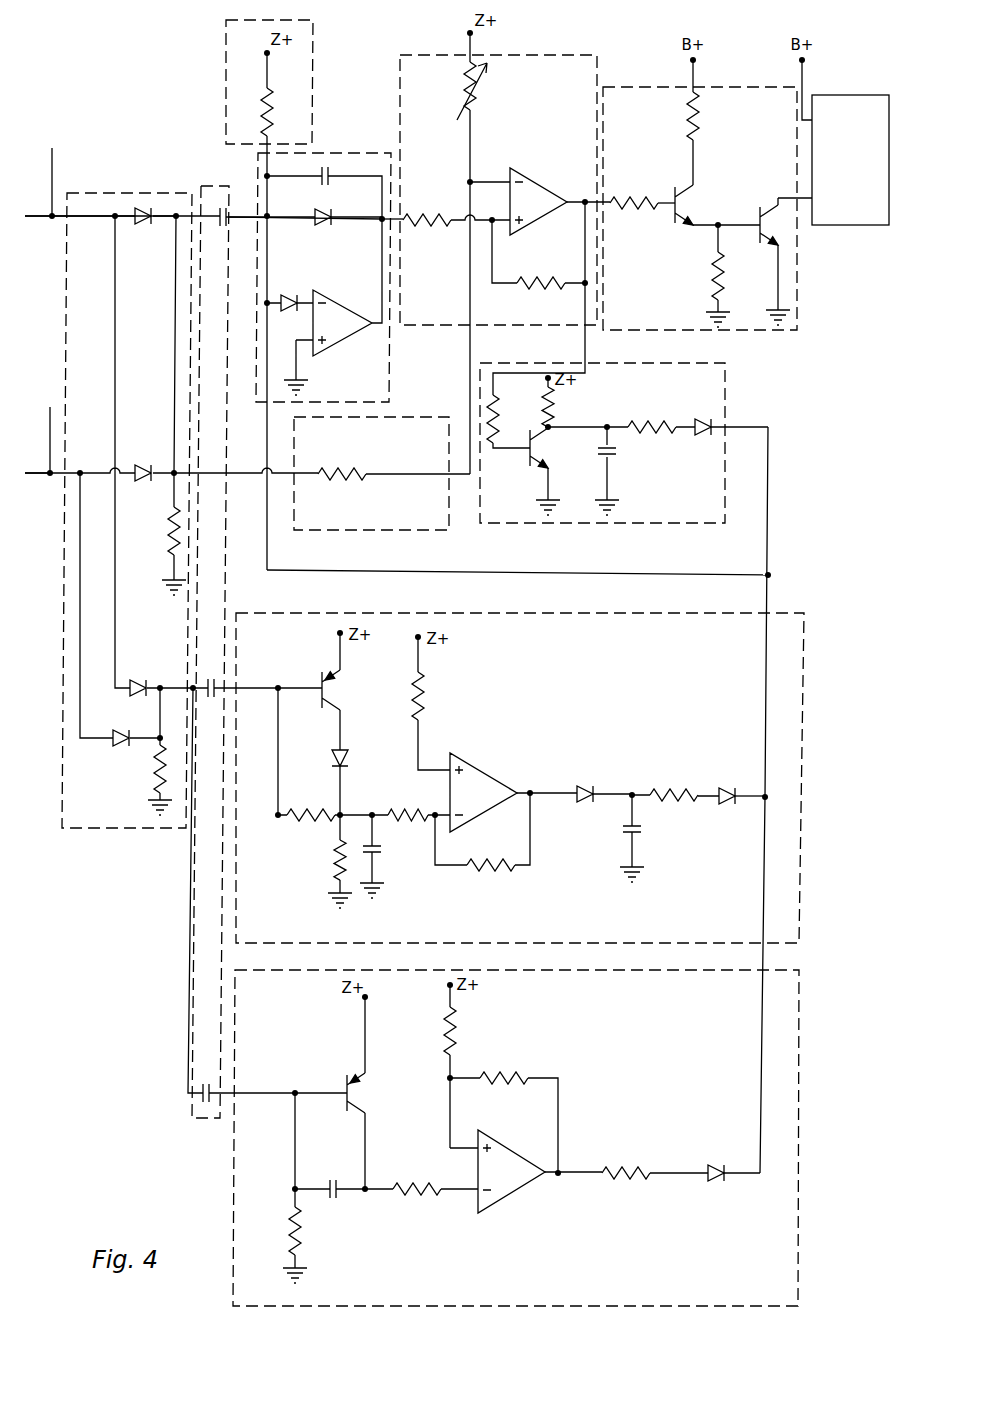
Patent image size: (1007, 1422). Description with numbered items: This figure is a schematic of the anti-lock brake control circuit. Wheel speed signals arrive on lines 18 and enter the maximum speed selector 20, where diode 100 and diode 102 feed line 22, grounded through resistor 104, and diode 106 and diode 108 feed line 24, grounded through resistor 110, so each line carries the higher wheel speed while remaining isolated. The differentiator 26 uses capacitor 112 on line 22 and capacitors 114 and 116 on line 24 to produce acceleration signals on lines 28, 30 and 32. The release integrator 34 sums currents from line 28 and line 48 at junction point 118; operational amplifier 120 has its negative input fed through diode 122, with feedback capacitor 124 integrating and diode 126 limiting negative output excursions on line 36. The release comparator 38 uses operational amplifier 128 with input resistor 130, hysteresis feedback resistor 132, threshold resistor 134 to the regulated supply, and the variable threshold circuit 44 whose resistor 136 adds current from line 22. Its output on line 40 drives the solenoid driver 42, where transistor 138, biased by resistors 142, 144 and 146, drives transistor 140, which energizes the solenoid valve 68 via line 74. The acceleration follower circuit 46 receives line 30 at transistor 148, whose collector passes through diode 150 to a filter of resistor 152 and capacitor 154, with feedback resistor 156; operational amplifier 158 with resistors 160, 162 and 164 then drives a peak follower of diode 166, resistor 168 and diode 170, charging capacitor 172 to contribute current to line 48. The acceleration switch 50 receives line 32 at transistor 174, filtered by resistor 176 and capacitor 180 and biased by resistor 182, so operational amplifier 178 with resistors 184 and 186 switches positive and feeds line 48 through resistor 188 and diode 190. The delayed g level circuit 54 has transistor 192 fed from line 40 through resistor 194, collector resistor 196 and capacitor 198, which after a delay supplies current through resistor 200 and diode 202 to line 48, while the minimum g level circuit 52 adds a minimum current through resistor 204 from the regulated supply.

The line 18 is at (60, 220).
The maximum speed selector 20 is at (100, 828).
The line 22 is at (160, 213).
The line 24 is at (158, 716).
The differentiator 26 is at (205, 186).
The line 28 is at (247, 214).
The line 30 is at (272, 684).
The line 32 is at (307, 1090).
The release integrator 34 is at (389, 390).
The line 36 is at (395, 216).
The release comparator 38 is at (555, 55).
The line 40 is at (590, 200).
The solenoid driver 42 is at (743, 87).
The variable threshold circuit 44 is at (415, 530).
The acceleration follower circuit 46 is at (800, 868).
The line 48 is at (650, 573).
The acceleration switch 50 is at (800, 1078).
The minimum g level circuit 52 is at (313, 55).
The delayed g level circuit 54 is at (725, 393).
The solenoid valve 68 is at (855, 98).
The line 74 is at (790, 200).
The diode 100 is at (140, 226).
The diode 102 is at (143, 466).
The resistor 104 is at (170, 540).
The diode 106 is at (138, 680).
The diode 108 is at (118, 745).
The resistor 110 is at (157, 772).
The capacitor 112 is at (222, 228).
The capacitor 114 is at (214, 696).
The capacitor 116 is at (202, 1100).
The junction point 118 is at (270, 212).
The operational amplifier 120 is at (345, 330).
The diode 122 is at (288, 296).
The feedback capacitor 124 is at (327, 168).
The diode 126 is at (322, 226).
The operational amplifier 128 is at (528, 180).
The resistor 130 is at (420, 228).
The feedback resistor 132 is at (545, 278).
The resistor 134 is at (482, 95).
The resistor 136 is at (350, 480).
The transistor 138 is at (672, 200).
The transistor 140 is at (768, 205).
The resistor 142 is at (625, 200).
The resistor 144 is at (697, 125).
The resistor 146 is at (714, 268).
The transistor 148 is at (318, 685).
The diode 150 is at (350, 758).
The resistor 152 is at (336, 860).
The capacitor 154 is at (378, 852).
The feedback resistor 156 is at (300, 820).
The operational amplifier 158 is at (480, 775).
The resistor 160 is at (422, 695).
The input resistor 162 is at (408, 810).
The feedback resistor 164 is at (500, 872).
The diode 166 is at (588, 788).
The resistor 168 is at (675, 792).
The diode 170 is at (725, 804).
The capacitor 172 is at (628, 830).
The transistor 174 is at (345, 1105).
The resistor 176 is at (420, 1194).
The operational amplifier 178 is at (528, 1190).
The capacitor 180 is at (335, 1197).
The resistor 182 is at (292, 1225).
The resistor 184 is at (448, 1030).
The feedback resistor 186 is at (505, 1075).
The resistor 188 is at (622, 1168).
The diode 190 is at (718, 1165).
The transistor 192 is at (528, 458).
The resistor 194 is at (497, 410).
The resistor 196 is at (552, 405).
The capacitor 198 is at (612, 455).
The resistor 200 is at (655, 424).
The diode 202 is at (702, 437).
The resistor 204 is at (262, 105).